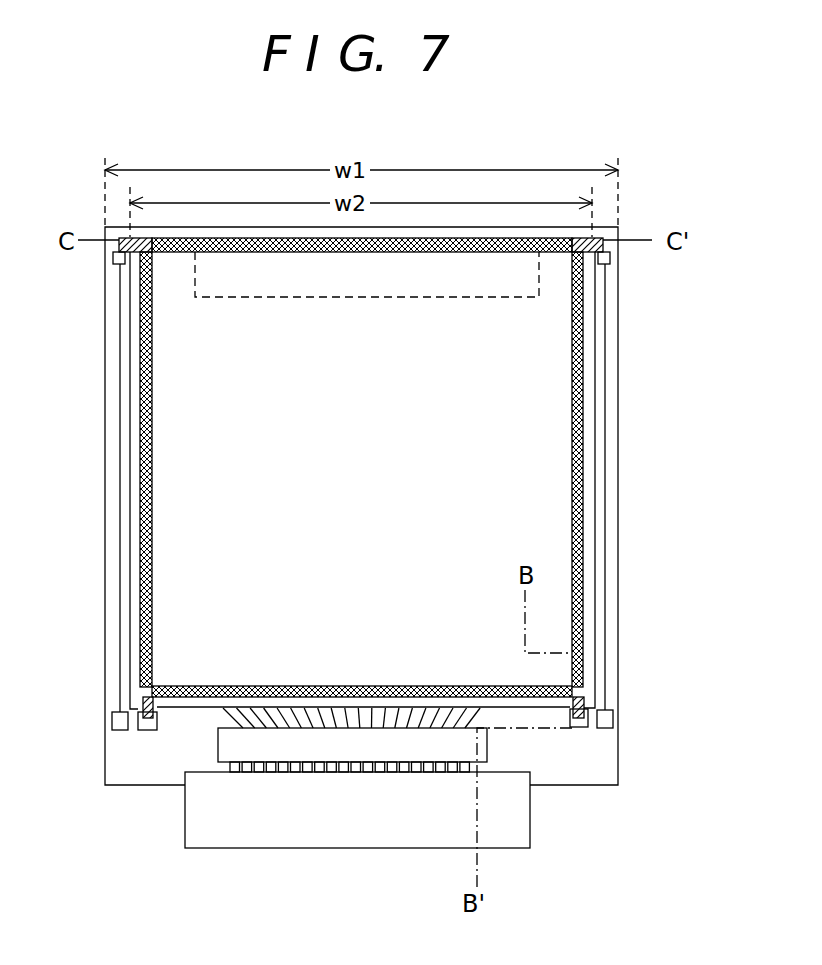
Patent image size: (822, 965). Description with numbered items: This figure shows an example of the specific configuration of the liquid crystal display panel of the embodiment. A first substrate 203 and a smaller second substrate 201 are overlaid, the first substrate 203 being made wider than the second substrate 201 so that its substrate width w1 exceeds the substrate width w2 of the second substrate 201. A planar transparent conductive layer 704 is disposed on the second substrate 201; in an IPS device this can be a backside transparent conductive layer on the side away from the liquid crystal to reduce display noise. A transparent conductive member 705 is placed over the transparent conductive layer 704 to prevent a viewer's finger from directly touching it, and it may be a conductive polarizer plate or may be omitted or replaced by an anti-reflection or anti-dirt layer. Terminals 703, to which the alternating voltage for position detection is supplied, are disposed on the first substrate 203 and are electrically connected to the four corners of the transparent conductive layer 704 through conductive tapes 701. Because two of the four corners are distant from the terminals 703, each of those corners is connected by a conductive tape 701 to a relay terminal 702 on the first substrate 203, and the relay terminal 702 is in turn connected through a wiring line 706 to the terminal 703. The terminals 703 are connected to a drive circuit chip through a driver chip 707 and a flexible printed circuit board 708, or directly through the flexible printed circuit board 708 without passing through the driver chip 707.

The second substrate 201 is at (588, 672).
The first substrate 203 is at (620, 752).
The conductive tape 701 is at (125, 240).
The relay terminal 702 is at (118, 262).
The terminal 703 is at (112, 720).
The transparent conductive layer 704 is at (592, 500).
The transparent conductive member 705 is at (150, 522).
The wiring line 706 is at (120, 412).
The driver chip 707 is at (228, 748).
The flexible printed circuit board 708 is at (522, 822).